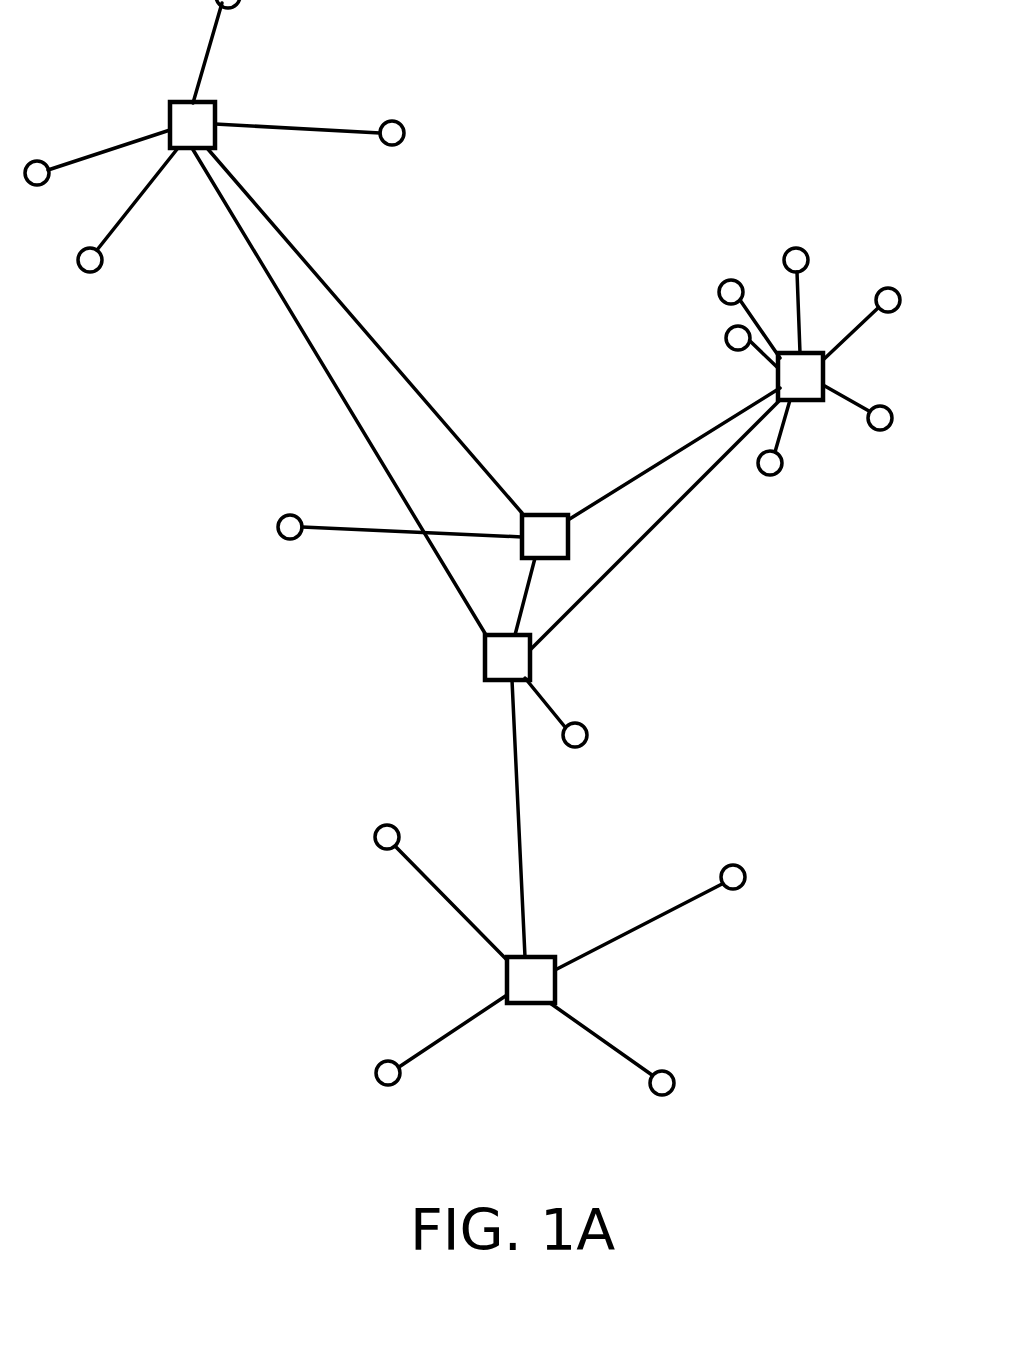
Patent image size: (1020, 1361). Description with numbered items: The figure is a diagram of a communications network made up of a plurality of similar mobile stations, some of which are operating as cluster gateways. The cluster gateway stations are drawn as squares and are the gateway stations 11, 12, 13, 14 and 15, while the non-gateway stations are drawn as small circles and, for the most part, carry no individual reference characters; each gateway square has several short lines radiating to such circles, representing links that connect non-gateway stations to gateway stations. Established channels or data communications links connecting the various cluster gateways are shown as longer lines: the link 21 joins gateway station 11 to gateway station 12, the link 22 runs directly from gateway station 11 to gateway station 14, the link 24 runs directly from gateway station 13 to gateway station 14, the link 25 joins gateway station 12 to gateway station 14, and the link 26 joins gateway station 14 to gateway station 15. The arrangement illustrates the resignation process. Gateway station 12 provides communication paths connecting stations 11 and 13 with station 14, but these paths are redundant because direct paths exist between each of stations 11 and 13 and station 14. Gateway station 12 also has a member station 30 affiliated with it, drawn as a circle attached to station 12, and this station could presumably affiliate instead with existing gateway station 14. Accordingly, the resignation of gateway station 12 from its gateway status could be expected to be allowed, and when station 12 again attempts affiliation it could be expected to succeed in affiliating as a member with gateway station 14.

The cluster gateway station 11 is at (216, 106).
The cluster gateway station 12 is at (545, 515).
The cluster gateway station 13 is at (804, 402).
The cluster gateway station 14 is at (482, 666).
The cluster gateway station 15 is at (507, 980).
The data communications link 21 is at (355, 313).
The data communications link 22 is at (305, 342).
The data communications link 24 is at (672, 518).
The data communications link 25 is at (527, 603).
The data communications link 26 is at (523, 850).
The member station 30 is at (280, 540).